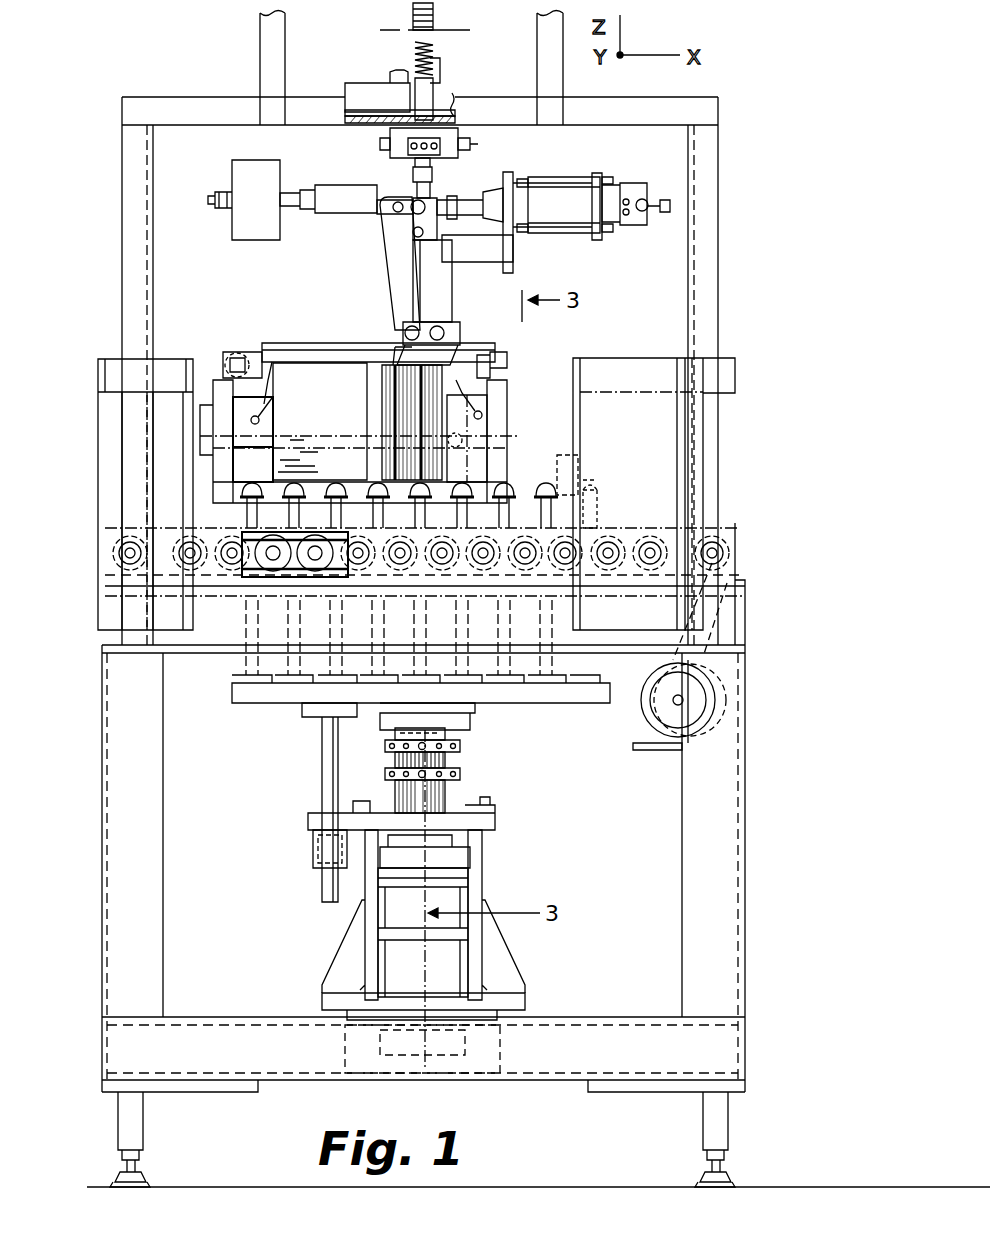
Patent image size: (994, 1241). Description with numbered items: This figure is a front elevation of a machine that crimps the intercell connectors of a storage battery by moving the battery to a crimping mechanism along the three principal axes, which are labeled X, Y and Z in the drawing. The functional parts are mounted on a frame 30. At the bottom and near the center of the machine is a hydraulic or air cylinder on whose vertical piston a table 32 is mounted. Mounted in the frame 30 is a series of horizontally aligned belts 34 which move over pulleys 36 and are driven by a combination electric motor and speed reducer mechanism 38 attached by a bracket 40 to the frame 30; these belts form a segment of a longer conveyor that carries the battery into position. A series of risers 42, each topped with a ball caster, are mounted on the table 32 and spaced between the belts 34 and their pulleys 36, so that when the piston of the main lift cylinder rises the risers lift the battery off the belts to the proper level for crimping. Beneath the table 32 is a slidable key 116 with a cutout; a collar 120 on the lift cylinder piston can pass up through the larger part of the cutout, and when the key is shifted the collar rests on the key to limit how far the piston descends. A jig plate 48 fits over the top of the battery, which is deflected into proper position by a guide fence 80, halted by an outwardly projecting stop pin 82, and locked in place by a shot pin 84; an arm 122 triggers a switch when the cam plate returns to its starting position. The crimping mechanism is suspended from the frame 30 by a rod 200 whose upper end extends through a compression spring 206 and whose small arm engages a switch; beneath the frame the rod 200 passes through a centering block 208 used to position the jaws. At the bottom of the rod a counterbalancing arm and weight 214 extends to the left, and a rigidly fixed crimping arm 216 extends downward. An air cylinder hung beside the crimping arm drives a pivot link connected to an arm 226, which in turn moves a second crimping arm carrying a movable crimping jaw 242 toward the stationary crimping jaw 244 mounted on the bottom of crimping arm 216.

The frame 30 is at (139, 128).
The table 32 is at (255, 702).
The belts 34 is at (638, 528).
The pulleys 36 is at (302, 570).
The combination electric motor and speed reducer mechanism 38 is at (660, 702).
The bracket 40 is at (660, 750).
The risers 42 is at (511, 483).
The jig plate 48 is at (295, 355).
The guide fence 80 is at (100, 387).
The stop pin 82 is at (492, 366).
The shot pin 84 is at (242, 350).
The key 116 is at (469, 815).
The collar 120 is at (456, 775).
The arm 122 is at (396, 426).
The rod 200 is at (434, 2).
The compression spring 206 is at (436, 36).
The centering block 208 is at (458, 130).
The counterbalancing arm and weight 214 is at (352, 193).
The crimping arm 216 is at (440, 285).
The arm 226 is at (395, 250).
The movable crimping jaw 242 is at (402, 353).
The stationary crimping jaw 244 is at (440, 357).